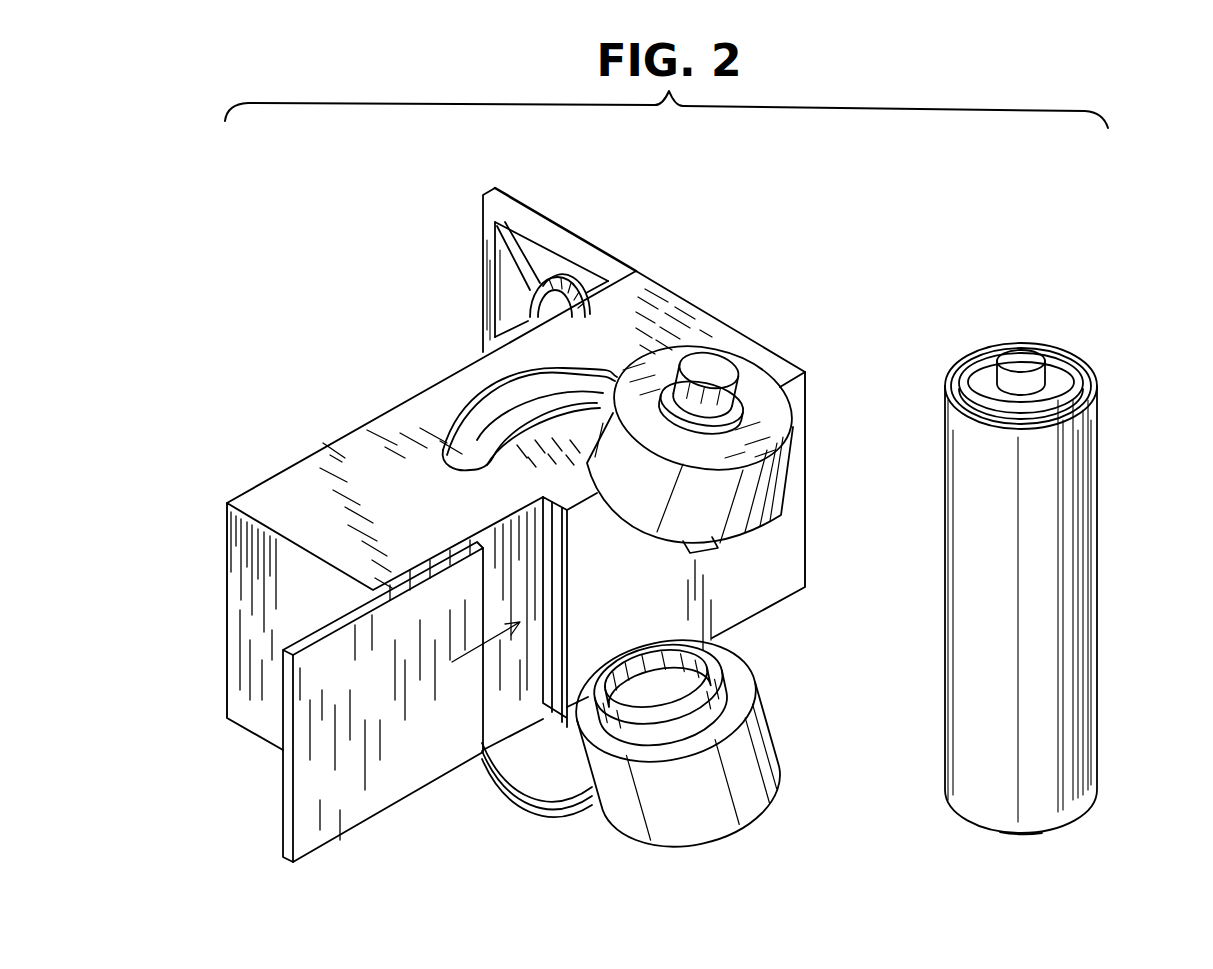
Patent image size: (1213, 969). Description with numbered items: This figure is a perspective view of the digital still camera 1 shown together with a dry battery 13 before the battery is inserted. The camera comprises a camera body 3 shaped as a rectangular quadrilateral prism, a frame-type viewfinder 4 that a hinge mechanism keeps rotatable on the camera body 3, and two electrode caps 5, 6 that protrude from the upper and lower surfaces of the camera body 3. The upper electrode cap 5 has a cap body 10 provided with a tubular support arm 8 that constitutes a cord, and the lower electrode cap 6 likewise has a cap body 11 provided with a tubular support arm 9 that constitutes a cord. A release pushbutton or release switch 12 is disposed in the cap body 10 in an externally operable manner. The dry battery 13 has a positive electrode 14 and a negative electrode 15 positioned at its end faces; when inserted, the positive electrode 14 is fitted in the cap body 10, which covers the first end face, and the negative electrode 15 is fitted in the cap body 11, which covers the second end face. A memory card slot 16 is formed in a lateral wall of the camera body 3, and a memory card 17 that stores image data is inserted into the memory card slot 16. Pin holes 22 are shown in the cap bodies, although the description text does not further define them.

The digital still camera 1 is at (232, 472).
The camera body 3 is at (360, 455).
The frame-type viewfinder 4 is at (483, 245).
The electrode cap 5 is at (732, 408).
The electrode cap 6 is at (675, 770).
The tubular support arm 8 is at (583, 385).
The tubular support arm 9 is at (545, 792).
The cap body 10 is at (777, 430).
The cap body 11 is at (627, 817).
The release pushbutton 12 is at (718, 378).
The dry battery 13 is at (1064, 589).
The positive electrode 14 is at (1020, 355).
The negative electrode 15 is at (1020, 834).
The memory card slot 16 is at (553, 574).
The memory card 17 is at (363, 795).
The pin hole 22 is at (693, 550).